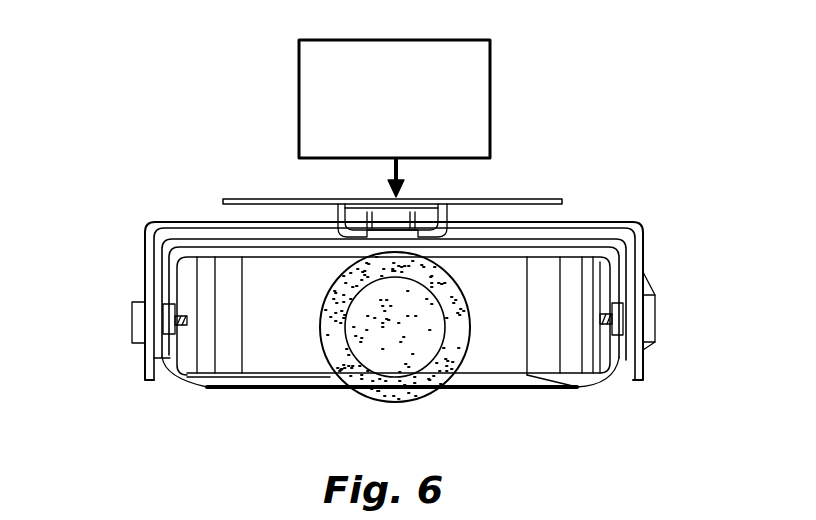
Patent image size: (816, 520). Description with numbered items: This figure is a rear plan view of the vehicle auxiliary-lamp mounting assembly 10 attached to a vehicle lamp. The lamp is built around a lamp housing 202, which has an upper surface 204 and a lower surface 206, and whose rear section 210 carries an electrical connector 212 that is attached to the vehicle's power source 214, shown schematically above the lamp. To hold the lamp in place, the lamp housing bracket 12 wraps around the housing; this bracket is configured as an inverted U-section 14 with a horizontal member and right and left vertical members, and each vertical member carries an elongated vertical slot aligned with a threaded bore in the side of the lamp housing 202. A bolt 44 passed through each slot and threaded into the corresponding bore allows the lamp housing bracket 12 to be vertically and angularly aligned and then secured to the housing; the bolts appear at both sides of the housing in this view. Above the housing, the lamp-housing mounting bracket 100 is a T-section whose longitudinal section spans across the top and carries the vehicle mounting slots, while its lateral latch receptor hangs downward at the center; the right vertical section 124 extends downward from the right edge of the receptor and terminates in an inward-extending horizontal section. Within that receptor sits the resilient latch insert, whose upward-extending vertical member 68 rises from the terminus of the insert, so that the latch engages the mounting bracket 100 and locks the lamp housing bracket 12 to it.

The assembly 10 is at (677, 118).
The lamp housing bracket 12 is at (592, 223).
The inverted U-section 14 is at (637, 247).
The bolt 44 is at (140, 320).
The upward-extending vertical member 68 is at (362, 220).
The lamp-housing mounting bracket 100 is at (522, 200).
The right vertical section 124 is at (338, 225).
The lamp housing 202 is at (543, 297).
The upper surface 204 is at (558, 253).
The lower surface 206 is at (577, 391).
The rear section 210 is at (190, 378).
The electrical connector 212 is at (380, 323).
The vehicle's power source 214 is at (394, 118).